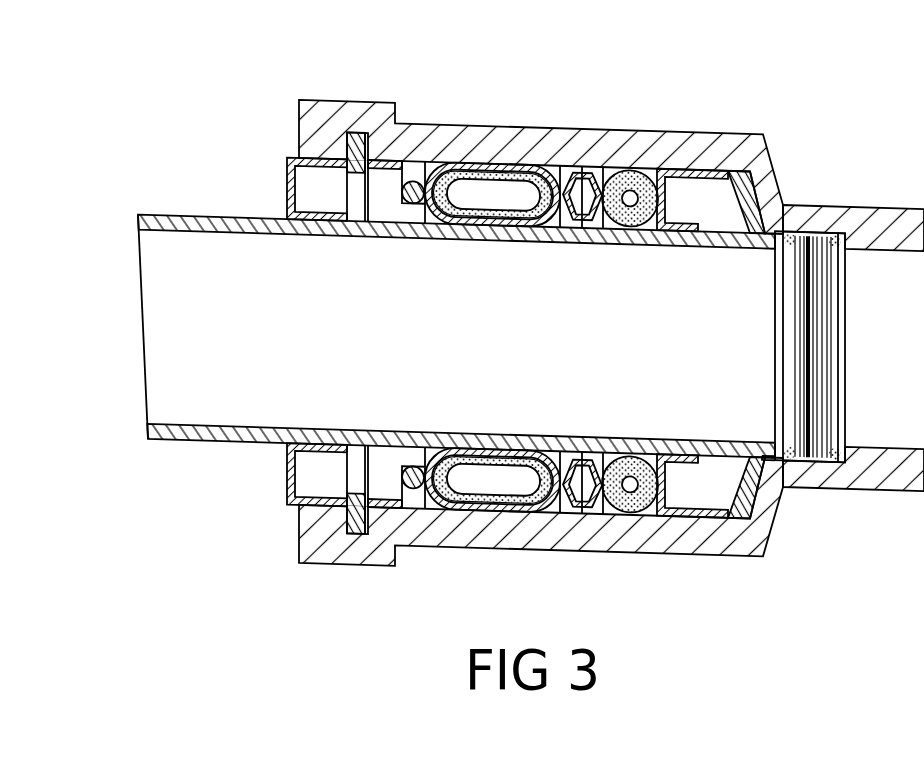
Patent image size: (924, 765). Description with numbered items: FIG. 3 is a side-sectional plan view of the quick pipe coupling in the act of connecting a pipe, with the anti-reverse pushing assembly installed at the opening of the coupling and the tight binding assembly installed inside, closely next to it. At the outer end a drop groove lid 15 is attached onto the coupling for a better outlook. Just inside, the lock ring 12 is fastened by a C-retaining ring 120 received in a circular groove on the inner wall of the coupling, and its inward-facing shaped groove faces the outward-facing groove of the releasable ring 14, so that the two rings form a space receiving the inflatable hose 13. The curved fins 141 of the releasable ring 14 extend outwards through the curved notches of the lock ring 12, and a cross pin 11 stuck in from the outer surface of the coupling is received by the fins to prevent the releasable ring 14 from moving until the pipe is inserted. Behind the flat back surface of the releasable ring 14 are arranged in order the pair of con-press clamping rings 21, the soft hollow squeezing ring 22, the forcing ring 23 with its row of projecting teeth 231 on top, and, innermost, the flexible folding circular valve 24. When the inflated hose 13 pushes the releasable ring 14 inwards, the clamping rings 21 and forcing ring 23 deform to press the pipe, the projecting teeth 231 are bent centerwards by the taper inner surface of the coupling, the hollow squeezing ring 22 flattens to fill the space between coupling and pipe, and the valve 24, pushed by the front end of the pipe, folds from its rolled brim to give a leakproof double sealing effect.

The cross pin 11 is at (414, 169).
The lock ring 12 is at (433, 150).
The inflatable hose 13 is at (503, 155).
The releasable ring 14 is at (543, 149).
The drop groove lid 15 is at (287, 171).
The con-press clamping rings 21 is at (600, 159).
The hollow squeezing ring 22 is at (647, 161).
The forcing ring 23 is at (715, 151).
The flexible folding circular valve 24 is at (848, 203).
The C-retaining ring 120 is at (354, 122).
The curved fins 141 is at (386, 149).
The projecting teeth 231 is at (767, 147).